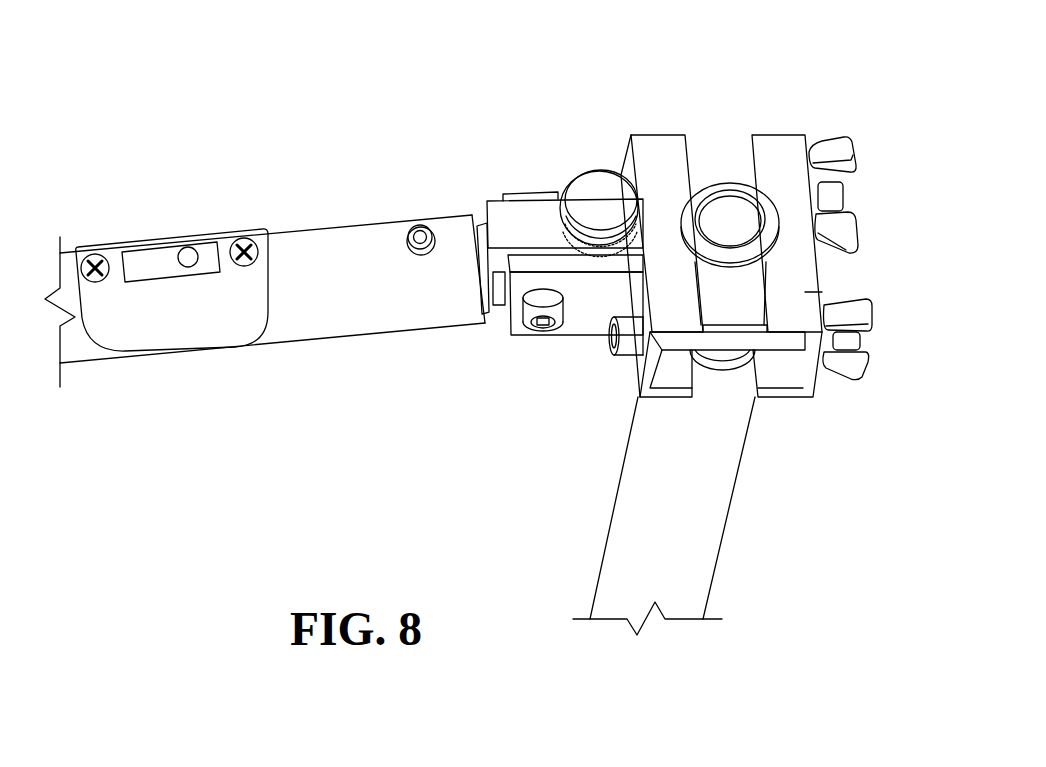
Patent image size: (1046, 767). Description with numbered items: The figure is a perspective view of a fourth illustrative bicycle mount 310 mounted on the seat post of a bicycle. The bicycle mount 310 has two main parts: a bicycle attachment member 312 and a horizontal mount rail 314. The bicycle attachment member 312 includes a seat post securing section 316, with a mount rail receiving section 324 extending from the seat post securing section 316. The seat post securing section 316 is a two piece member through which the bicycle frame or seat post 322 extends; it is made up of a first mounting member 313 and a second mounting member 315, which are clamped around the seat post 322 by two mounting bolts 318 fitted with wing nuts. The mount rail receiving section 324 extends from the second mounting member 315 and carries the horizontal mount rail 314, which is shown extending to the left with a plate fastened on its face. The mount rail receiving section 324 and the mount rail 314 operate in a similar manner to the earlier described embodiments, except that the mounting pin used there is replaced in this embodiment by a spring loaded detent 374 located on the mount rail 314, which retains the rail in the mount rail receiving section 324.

The bicycle mount 310 is at (762, 87).
The bicycle attachment member 312 is at (856, 278).
The first mounting member 313 is at (810, 292).
The horizontal mount rail 314 is at (275, 276).
The second mounting member 315 is at (665, 320).
The seat post securing section 316 is at (772, 136).
The mounting bolts 318 is at (847, 193).
The seat post 322 is at (705, 518).
The mount rail receiving section 324 is at (520, 212).
The spring loaded detent 374 is at (430, 252).